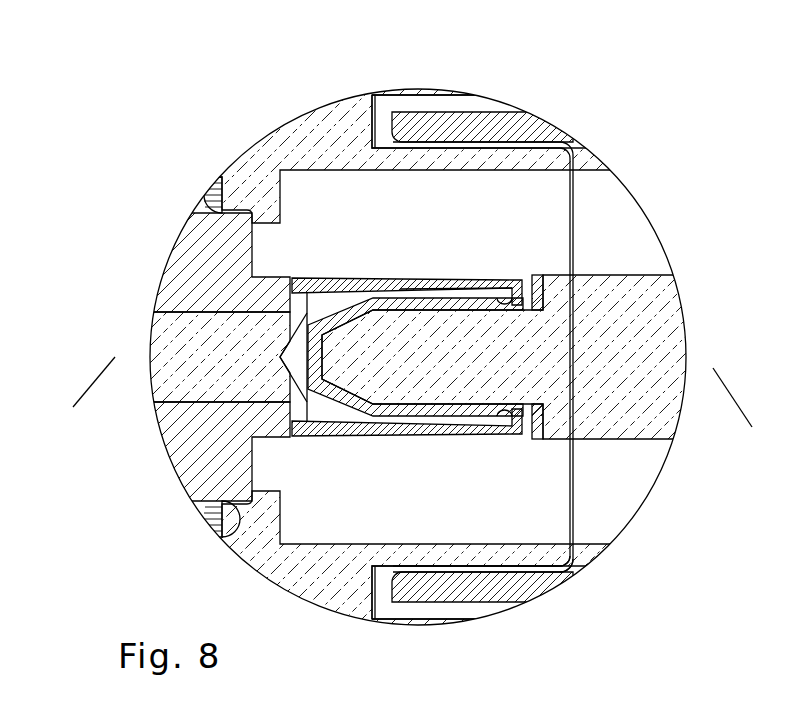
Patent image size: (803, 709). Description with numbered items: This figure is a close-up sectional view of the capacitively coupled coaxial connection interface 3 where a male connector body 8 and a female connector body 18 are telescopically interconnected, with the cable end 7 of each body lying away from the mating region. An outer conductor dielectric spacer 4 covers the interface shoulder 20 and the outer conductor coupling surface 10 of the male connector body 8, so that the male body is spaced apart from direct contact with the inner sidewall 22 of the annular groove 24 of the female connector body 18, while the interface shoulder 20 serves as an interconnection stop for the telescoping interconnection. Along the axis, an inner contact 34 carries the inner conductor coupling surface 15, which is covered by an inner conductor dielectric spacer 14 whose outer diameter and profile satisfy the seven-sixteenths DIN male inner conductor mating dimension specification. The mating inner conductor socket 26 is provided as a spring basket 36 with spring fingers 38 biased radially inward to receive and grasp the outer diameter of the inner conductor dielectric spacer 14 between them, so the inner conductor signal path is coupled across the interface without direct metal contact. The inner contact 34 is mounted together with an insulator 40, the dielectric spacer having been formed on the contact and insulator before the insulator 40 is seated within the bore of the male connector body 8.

The connection interface 3 is at (383, 103).
The outer conductor dielectric spacer 4 is at (468, 572).
The cable end 7 is at (411, 399).
The male connector body 8 is at (542, 588).
The outer conductor coupling surface 10 is at (428, 575).
The inner conductor dielectric spacer 14 is at (360, 310).
The inner conductor coupling surface 15 is at (494, 290).
The female connector body 18 is at (250, 172).
The interface shoulder 20 is at (570, 562).
The inner sidewall 22 is at (497, 568).
The annular groove 24 is at (382, 598).
The inner conductor socket 26 is at (318, 308).
The inner contact 34 is at (212, 338).
The spring basket 36 is at (395, 283).
The spring fingers 38 is at (468, 282).
The insulator 40 is at (200, 452).